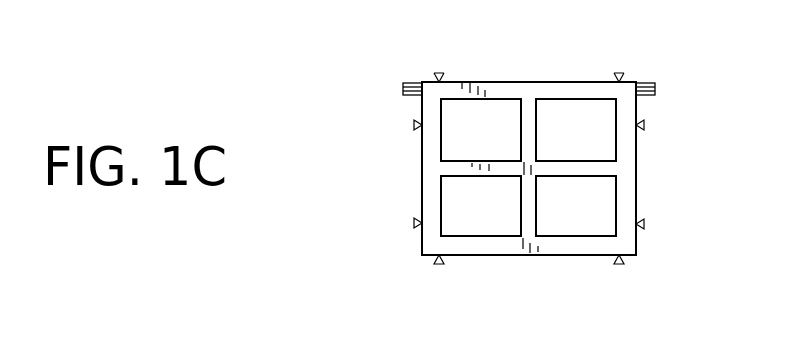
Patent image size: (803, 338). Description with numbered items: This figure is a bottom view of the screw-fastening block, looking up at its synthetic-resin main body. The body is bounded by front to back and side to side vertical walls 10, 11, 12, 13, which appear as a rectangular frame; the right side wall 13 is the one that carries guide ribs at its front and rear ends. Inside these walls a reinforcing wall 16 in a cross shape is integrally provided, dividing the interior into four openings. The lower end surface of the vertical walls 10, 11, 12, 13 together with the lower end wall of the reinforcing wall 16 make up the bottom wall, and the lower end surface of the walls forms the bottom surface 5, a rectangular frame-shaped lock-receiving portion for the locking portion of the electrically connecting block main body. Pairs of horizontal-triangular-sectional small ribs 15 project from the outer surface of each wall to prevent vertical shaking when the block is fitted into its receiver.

The bottom surface 5 is at (495, 88).
The vertical wall 10 is at (422, 147).
The vertical wall 11 is at (636, 147).
The vertical wall 12 is at (537, 240).
The right side wall 13 is at (538, 82).
The small rib 15 is at (620, 261).
The reinforcing wall 16 is at (537, 142).